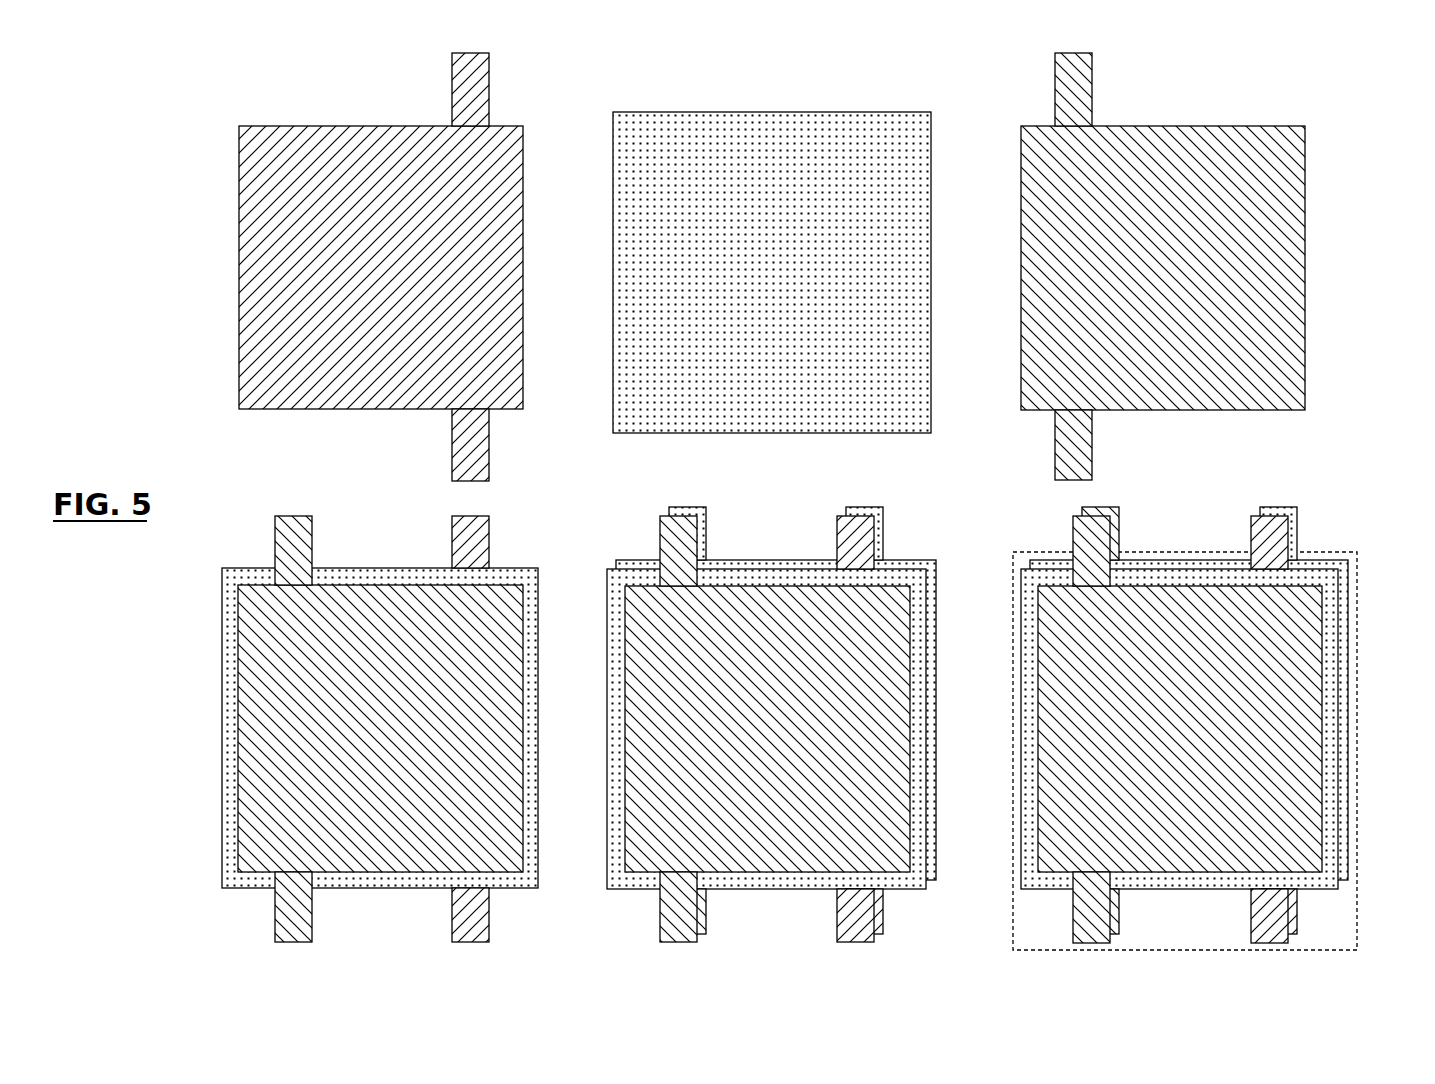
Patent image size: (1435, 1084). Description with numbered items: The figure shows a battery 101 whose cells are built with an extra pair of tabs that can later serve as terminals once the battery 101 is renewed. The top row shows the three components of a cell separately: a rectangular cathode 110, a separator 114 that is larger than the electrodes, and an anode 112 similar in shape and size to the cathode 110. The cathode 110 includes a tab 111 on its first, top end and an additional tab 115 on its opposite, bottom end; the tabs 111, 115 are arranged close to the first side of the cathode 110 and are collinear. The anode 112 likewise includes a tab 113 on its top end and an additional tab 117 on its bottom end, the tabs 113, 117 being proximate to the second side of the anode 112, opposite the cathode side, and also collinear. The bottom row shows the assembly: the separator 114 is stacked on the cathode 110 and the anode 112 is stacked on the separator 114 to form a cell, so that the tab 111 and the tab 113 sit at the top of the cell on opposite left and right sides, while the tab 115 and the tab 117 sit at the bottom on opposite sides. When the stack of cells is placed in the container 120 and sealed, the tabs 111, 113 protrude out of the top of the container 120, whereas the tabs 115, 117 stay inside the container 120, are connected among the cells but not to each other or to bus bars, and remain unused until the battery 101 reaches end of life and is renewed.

The battery 101 is at (1190, 518).
The cathode 110 is at (238, 188).
The tab 111 is at (487, 92).
The anode 112 is at (1305, 210).
The tab 113 is at (1090, 100).
The separator 114 is at (770, 112).
The tab 115 is at (488, 460).
The tab 117 is at (1092, 462).
The container 120 is at (1358, 758).